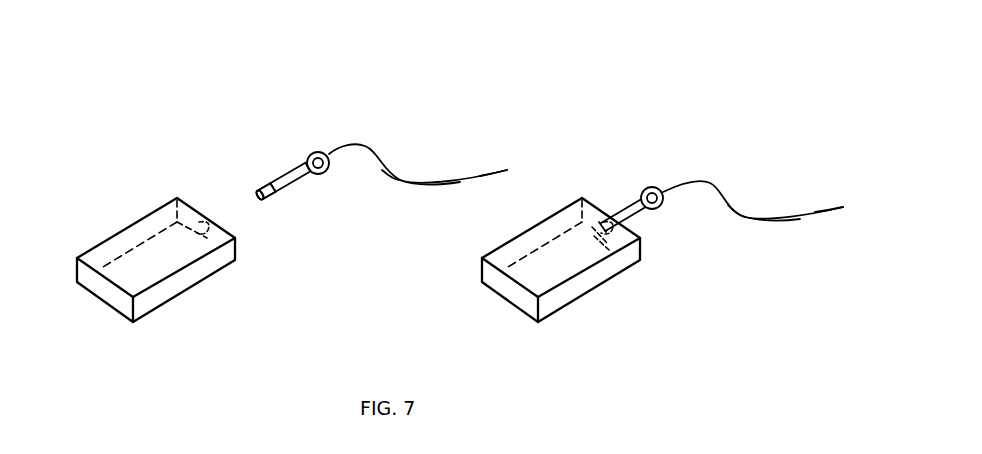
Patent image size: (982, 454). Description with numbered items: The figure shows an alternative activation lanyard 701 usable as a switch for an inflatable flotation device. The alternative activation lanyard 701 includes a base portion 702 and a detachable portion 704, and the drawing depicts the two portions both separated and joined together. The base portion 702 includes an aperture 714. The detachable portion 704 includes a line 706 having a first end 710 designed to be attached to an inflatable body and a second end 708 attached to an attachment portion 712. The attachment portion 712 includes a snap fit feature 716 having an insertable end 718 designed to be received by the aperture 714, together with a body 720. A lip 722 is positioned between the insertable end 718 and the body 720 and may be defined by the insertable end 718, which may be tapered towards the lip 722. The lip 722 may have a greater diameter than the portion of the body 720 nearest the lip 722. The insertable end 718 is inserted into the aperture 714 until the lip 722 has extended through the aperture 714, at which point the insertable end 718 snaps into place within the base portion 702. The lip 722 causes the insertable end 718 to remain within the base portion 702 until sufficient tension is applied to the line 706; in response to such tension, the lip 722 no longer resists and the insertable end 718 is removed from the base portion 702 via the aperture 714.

The alternative activation lanyard 701 is at (509, 56).
The base portion 702 is at (115, 250).
The detachable portion 704 is at (395, 162).
The line 706 is at (415, 184).
The second end 708 is at (328, 153).
The first end 710 is at (507, 170).
The attachment portion 712 is at (282, 175).
The aperture 714 is at (177, 197).
The snap fit feature 716 is at (262, 201).
The insertable end 718 is at (255, 195).
The body 720 is at (307, 177).
The lip 722 is at (278, 189).